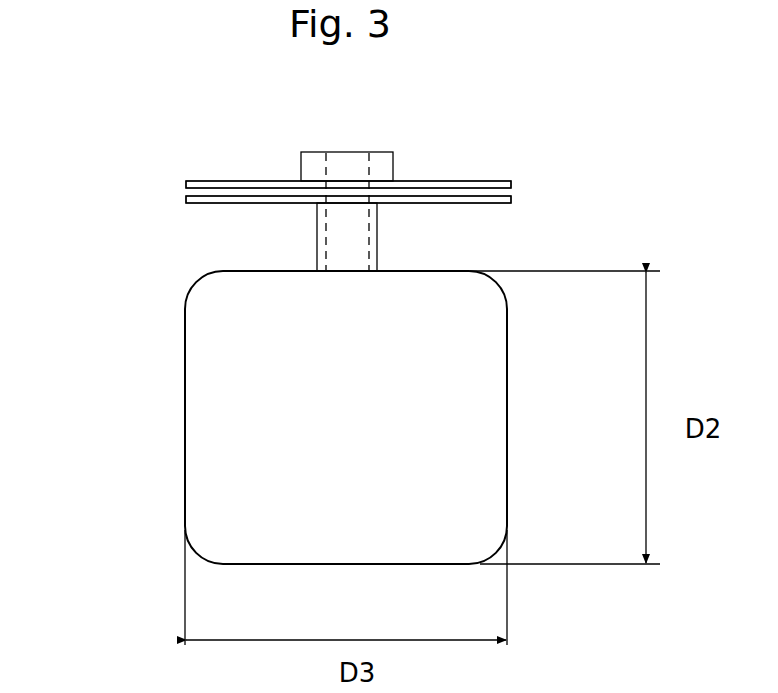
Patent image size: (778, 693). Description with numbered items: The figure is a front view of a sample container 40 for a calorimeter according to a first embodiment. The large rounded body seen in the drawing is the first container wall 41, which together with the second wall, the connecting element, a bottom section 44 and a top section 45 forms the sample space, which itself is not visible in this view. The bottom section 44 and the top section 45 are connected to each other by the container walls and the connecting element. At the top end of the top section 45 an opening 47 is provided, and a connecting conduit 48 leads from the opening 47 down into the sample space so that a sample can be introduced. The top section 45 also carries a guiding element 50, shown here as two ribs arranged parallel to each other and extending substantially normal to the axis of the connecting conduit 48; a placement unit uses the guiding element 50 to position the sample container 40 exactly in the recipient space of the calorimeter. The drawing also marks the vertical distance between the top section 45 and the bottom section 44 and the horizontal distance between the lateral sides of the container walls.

The sample container 40 is at (147, 133).
The first container wall 41 is at (318, 400).
The bottom section 44 is at (317, 565).
The top section 45 is at (227, 168).
The opening 47 is at (368, 150).
The connecting conduit 48 is at (369, 241).
The guiding element 50 is at (210, 184).